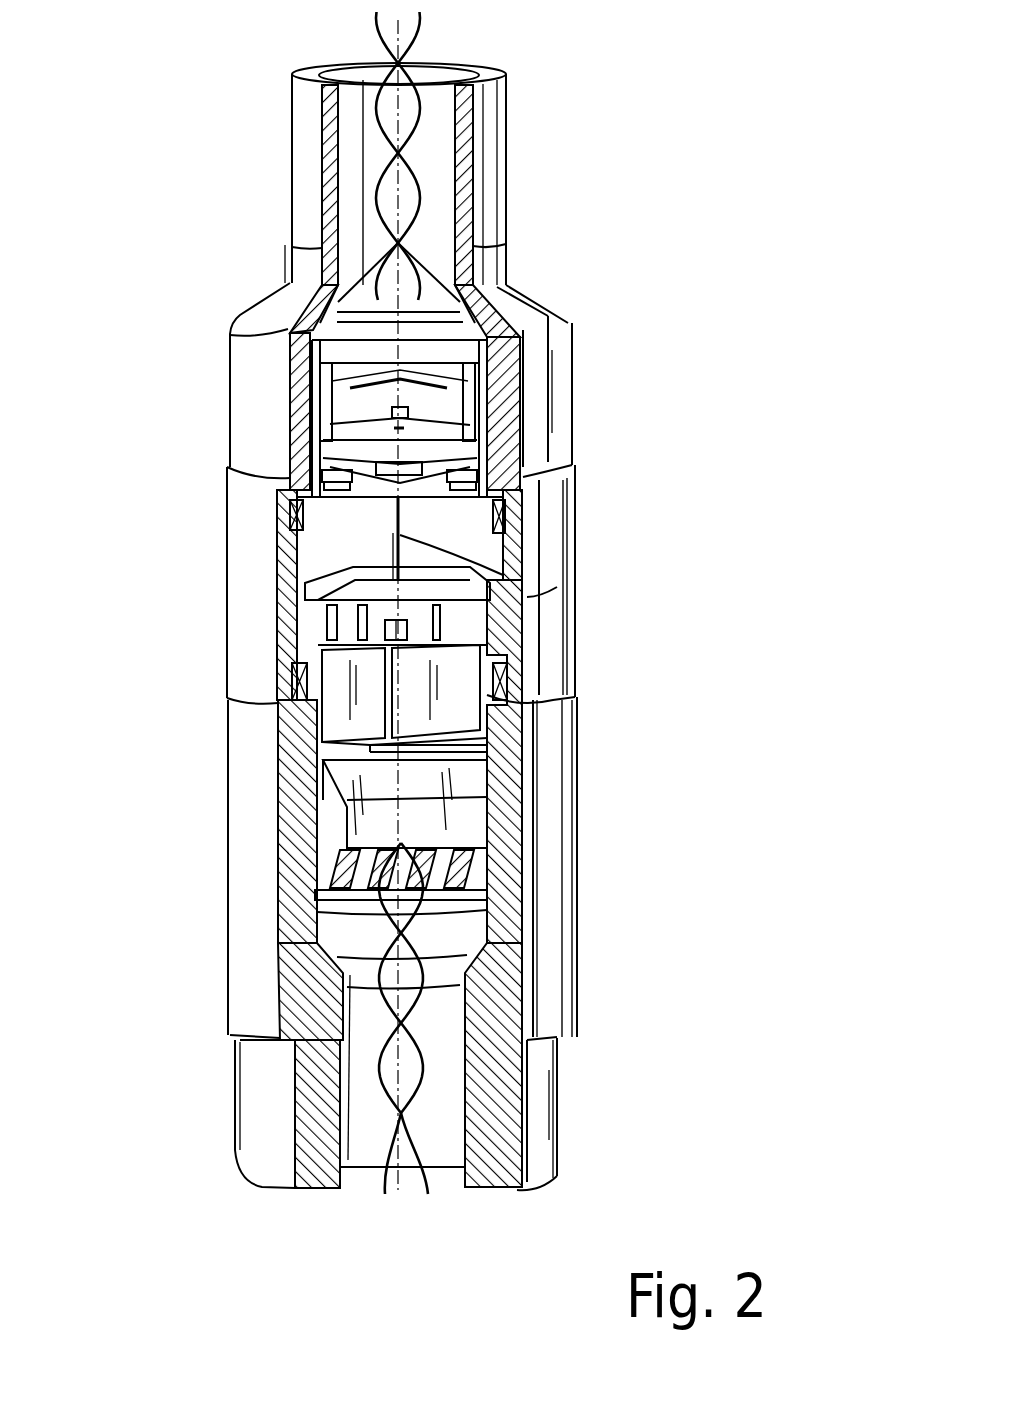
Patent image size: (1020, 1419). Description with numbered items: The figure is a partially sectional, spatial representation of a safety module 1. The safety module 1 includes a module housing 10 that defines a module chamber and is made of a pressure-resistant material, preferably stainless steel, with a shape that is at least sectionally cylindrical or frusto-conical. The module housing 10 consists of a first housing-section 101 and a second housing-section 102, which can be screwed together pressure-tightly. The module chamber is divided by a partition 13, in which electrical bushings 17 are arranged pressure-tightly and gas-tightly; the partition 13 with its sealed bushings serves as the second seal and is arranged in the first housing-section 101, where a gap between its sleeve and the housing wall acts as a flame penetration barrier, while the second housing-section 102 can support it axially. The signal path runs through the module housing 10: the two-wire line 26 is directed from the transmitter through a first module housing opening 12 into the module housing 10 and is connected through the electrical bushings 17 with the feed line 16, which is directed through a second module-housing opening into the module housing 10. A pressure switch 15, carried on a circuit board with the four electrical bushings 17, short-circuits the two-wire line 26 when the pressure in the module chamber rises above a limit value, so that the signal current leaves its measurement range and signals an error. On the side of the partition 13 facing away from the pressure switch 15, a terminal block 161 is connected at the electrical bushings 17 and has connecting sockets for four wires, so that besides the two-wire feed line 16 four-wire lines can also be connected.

The safety module 1 is at (485, 717).
The module housing 10 is at (553, 780).
The first housing-section 101 is at (552, 533).
The second housing-section 102 is at (550, 1007).
The first module housing opening 12 is at (442, 177).
The partition 13 is at (320, 547).
The pressure switch 15 is at (355, 403).
The feed line 16 is at (430, 1180).
The terminal block 161 is at (330, 826).
The electrical bushings 17 is at (340, 495).
The two-wire line 26 is at (418, 25).